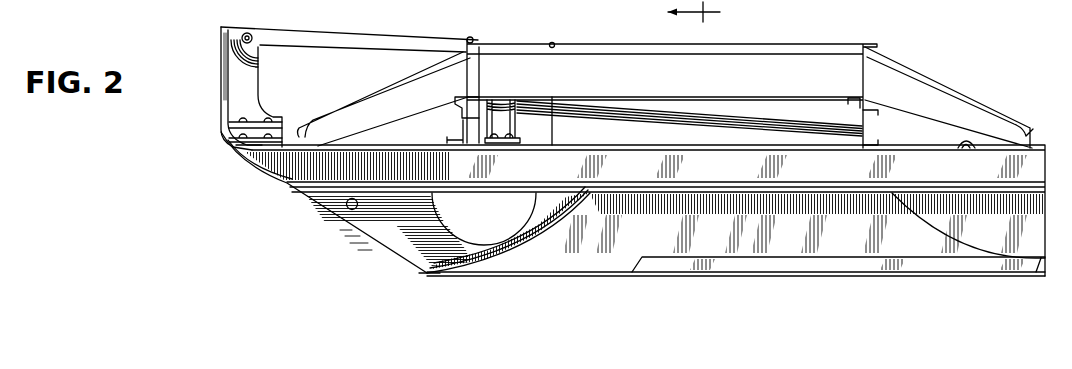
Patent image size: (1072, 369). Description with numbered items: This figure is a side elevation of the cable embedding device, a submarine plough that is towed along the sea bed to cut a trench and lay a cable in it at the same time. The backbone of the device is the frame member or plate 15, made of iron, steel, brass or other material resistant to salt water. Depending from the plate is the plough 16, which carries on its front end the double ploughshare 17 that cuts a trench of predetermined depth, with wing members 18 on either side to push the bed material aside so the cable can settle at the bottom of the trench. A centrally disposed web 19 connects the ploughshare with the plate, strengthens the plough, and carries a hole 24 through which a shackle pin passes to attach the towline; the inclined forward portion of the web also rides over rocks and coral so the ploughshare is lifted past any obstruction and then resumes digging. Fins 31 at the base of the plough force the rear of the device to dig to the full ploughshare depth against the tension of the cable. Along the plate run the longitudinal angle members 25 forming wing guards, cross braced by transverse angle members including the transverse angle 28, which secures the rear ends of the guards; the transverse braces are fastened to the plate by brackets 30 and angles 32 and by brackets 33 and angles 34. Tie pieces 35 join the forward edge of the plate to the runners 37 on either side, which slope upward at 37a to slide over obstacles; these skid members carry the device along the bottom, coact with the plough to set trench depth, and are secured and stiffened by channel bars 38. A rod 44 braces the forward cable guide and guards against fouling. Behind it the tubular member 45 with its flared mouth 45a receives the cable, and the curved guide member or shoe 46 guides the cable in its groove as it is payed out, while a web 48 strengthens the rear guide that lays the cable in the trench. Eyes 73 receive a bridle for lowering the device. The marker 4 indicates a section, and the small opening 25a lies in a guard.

The rod 44 is at (308, 38).
The angle member 25 is at (766, 50).
The aperture in deck panel 25a is at (551, 68).
The section line 4- 4 is at (681, 13).
The transverse angle member 28 is at (1028, 128).
The curved guide member or shoe 46 is at (476, 136).
The flared mouth 45a is at (505, 118).
The tubular member 45 is at (650, 123).
The bracket 30 is at (458, 104).
The angle 32 is at (458, 134).
The frame member or plate 15 is at (367, 147).
The bracket 33 is at (850, 102).
The angle 34 is at (866, 126).
The eye 73 is at (961, 143).
The tie piece 35 is at (222, 138).
The upwardly sloping portion of runner 37a is at (265, 172).
The hole 24 is at (347, 207).
The runner or skid member 37 is at (422, 193).
The channel bar 38 is at (500, 175).
The web 19 is at (405, 245).
The double ploughshare 17 is at (432, 276).
The wing member 18 is at (522, 240).
The plough 16 is at (600, 268).
The fin 31 is at (767, 263).
The web 48 is at (1028, 243).